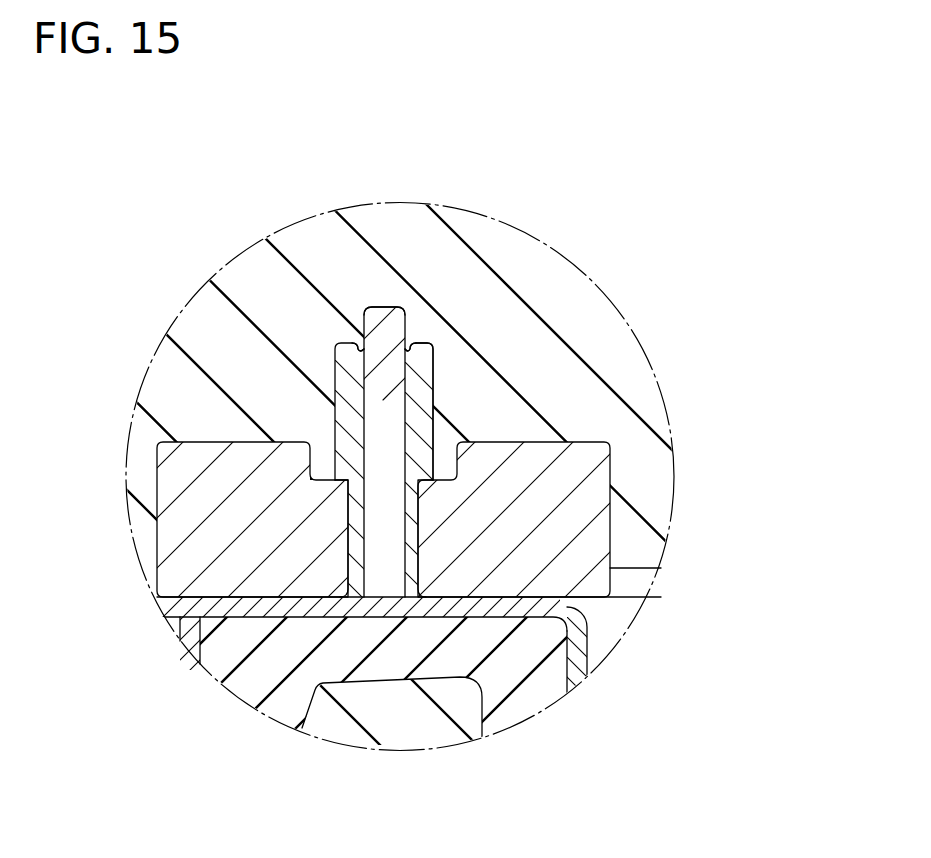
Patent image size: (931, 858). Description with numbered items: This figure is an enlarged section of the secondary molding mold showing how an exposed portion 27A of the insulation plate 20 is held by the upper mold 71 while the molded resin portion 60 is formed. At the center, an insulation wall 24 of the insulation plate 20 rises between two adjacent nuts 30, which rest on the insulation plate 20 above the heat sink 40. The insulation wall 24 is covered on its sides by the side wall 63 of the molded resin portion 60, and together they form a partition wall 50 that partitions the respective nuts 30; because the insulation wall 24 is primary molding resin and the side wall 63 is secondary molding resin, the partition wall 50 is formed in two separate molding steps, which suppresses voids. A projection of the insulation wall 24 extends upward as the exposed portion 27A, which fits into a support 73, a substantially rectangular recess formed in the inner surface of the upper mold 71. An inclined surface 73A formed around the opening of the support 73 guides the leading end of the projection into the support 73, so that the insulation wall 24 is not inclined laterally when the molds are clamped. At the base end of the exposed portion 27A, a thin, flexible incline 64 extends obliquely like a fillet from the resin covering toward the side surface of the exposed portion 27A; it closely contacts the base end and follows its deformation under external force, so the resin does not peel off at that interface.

The upper mold 71 is at (303, 265).
The exposed portion 27A is at (385, 322).
The support 73 is at (393, 307).
The incline 64 is at (411, 343).
The inclined surface 73A is at (343, 348).
The molded resin portion 60 is at (330, 383).
The insulation wall 24 is at (387, 377).
The side wall 63 is at (428, 423).
The partition wall 50 is at (755, 201).
The nut 30 is at (618, 469).
The heat sink 40 is at (262, 677).
The insulation plate 20 is at (537, 622).